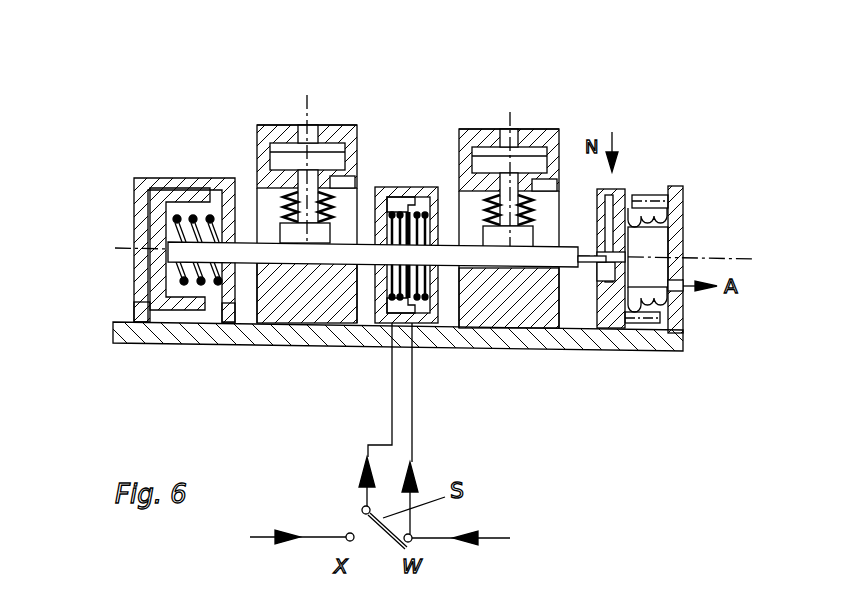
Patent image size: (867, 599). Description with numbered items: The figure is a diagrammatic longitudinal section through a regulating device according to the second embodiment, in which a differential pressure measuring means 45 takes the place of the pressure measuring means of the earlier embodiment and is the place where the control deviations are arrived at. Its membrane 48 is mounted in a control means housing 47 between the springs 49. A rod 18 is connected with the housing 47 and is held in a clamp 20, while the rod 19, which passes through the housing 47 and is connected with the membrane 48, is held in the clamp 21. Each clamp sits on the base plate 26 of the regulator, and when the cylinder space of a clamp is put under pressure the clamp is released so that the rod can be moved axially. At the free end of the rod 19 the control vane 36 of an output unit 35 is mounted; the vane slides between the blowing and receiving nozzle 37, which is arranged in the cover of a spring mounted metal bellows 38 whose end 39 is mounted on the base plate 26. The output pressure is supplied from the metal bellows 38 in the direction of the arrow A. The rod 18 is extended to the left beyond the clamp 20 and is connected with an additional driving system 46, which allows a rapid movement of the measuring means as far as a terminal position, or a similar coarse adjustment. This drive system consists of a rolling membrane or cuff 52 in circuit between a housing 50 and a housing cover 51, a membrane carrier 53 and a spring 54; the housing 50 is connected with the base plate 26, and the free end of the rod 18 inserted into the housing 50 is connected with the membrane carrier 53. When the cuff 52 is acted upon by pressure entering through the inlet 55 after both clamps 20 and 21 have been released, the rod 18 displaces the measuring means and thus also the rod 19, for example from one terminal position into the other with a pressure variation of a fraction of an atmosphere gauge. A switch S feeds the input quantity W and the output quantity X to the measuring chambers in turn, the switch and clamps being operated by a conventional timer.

The rod 18 is at (327, 256).
The rod 19 is at (523, 262).
The clamp 20 is at (313, 65).
The clamp 21 is at (516, 85).
The base plate 26 is at (500, 332).
The output device 35 is at (650, 143).
The control vane 36 is at (582, 264).
The blowing and receiving nozzle 37 is at (623, 307).
The metal bellows 38 is at (643, 307).
The end of metal bellows 39 is at (672, 307).
The differential pressure measuring means 45 is at (421, 135).
The additional driving system 46 is at (190, 130).
The control means housing 47 is at (410, 318).
The membrane 48 is at (362, 305).
The springs 49 is at (432, 323).
The housing 50 is at (222, 310).
The housing cover 51 is at (137, 262).
The rolling membrane or cuff 52 is at (200, 292).
The membrane carrier 53 is at (178, 297).
The spring 54 is at (217, 283).
The inlet 55 is at (137, 307).